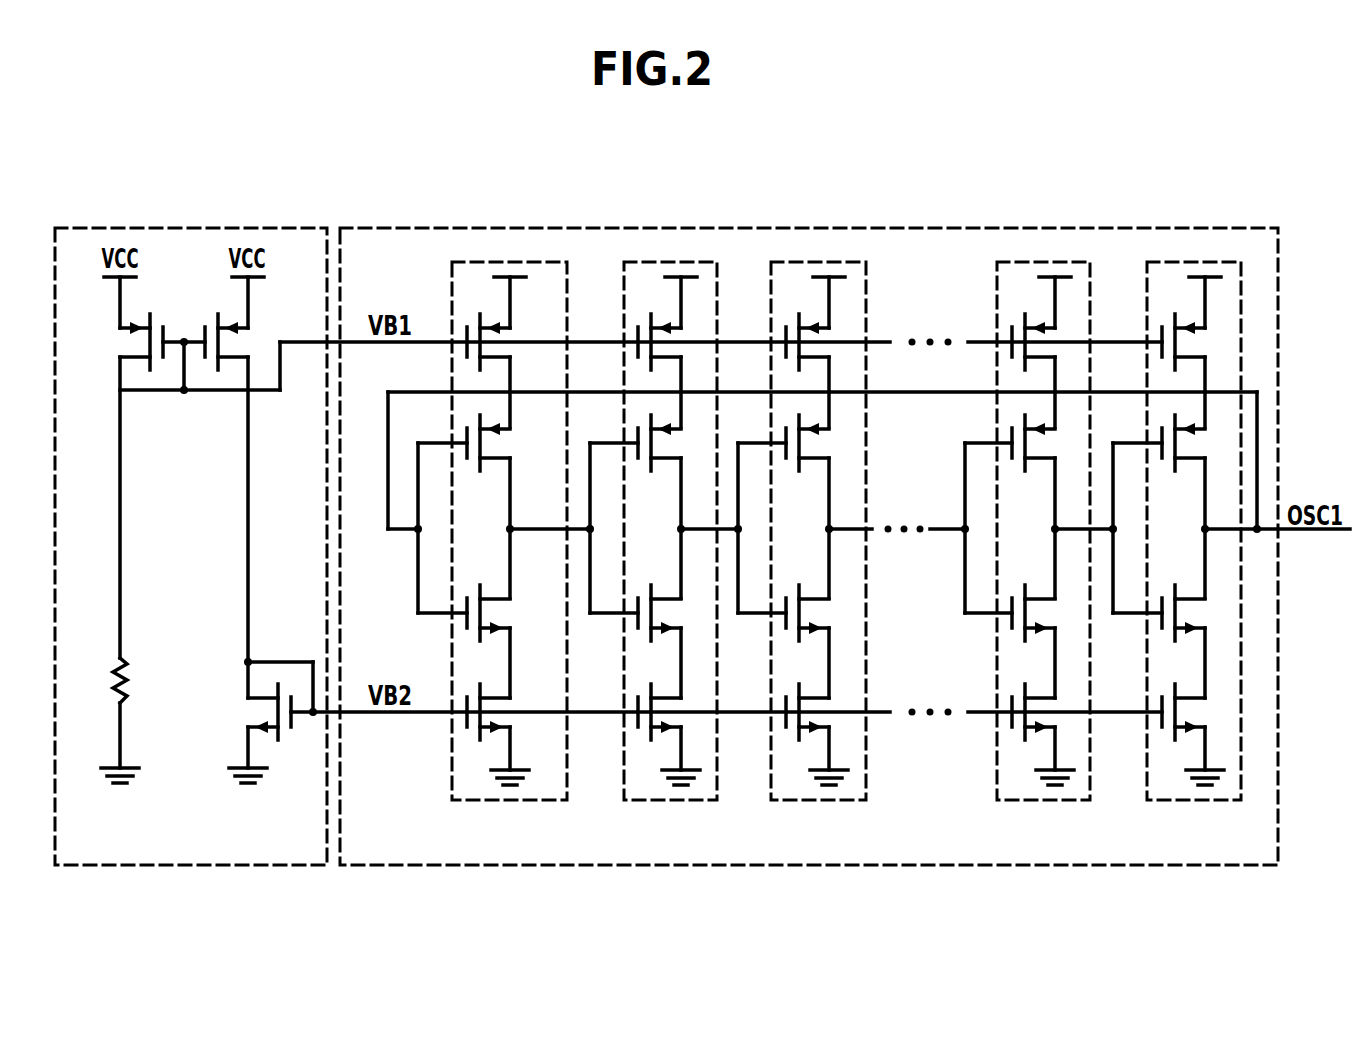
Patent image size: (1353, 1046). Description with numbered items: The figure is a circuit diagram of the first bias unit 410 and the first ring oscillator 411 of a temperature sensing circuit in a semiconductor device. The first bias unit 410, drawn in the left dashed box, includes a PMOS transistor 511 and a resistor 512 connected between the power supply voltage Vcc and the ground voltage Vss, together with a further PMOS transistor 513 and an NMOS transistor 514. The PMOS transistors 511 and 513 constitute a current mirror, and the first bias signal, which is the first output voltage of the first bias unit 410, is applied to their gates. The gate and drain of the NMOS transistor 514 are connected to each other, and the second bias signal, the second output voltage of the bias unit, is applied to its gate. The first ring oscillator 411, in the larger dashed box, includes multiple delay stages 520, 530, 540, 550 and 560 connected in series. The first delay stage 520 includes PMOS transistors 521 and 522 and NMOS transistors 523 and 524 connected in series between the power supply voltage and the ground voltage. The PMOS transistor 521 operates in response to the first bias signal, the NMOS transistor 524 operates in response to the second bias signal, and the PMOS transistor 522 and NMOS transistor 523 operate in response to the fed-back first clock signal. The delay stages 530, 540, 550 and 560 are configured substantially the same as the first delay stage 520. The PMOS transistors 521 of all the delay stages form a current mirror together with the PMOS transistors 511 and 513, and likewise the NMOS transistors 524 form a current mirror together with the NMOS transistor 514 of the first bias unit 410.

The first bias unit 410 is at (218, 228).
The first ring oscillator 411 is at (393, 228).
The PMOS transistor 511 is at (136, 342).
The resistor 512 is at (98, 681).
The PMOS transistor 513 is at (252, 340).
The NMOS transistor 514 is at (257, 712).
The first delay stage 520 is at (502, 560).
The PMOS transistor 521 is at (511, 340).
The PMOS transistor 522 is at (511, 443).
The NMOS transistor 523 is at (512, 613).
The NMOS transistor 524 is at (512, 711).
The delay stage 530 is at (696, 800).
The delay stage 540 is at (845, 800).
The delay stage 550 is at (1070, 800).
The delay stage 560 is at (1218, 800).